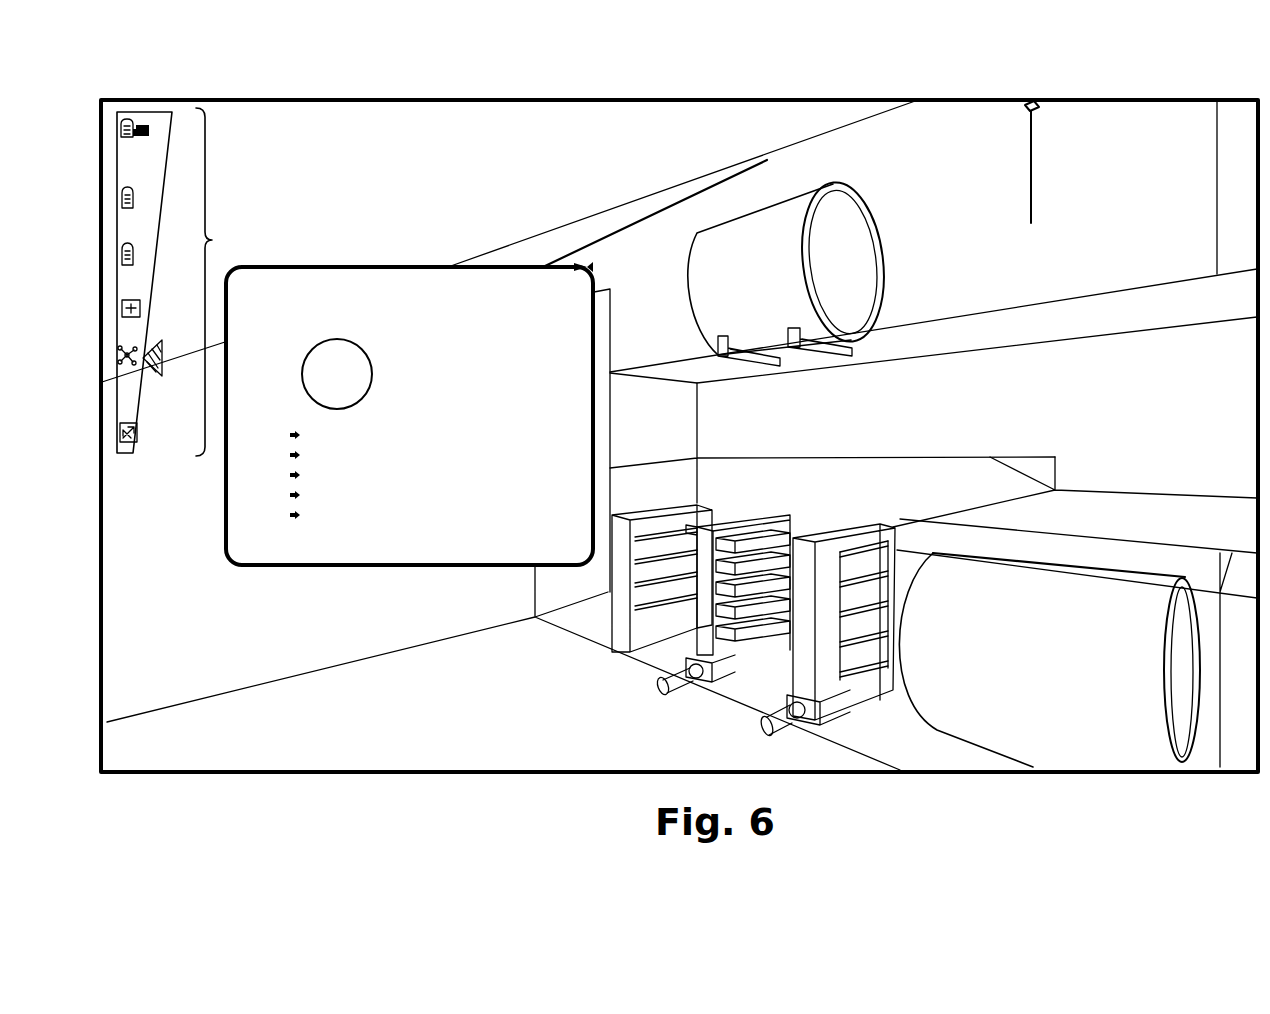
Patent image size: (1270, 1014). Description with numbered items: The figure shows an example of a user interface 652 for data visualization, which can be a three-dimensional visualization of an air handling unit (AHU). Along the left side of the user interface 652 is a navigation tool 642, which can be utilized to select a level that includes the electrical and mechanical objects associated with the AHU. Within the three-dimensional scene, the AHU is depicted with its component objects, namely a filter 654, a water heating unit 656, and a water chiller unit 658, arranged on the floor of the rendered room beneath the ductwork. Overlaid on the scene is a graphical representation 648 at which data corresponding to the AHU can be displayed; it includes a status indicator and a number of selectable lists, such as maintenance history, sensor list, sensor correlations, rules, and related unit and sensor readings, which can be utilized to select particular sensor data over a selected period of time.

The navigation tool 642 is at (175, 282).
The graphical representation 648 is at (522, 374).
The user interface 652 is at (972, 62).
The filter 654 is at (620, 628).
The water heating unit 656 is at (655, 667).
The water chiller unit 658 is at (807, 677).